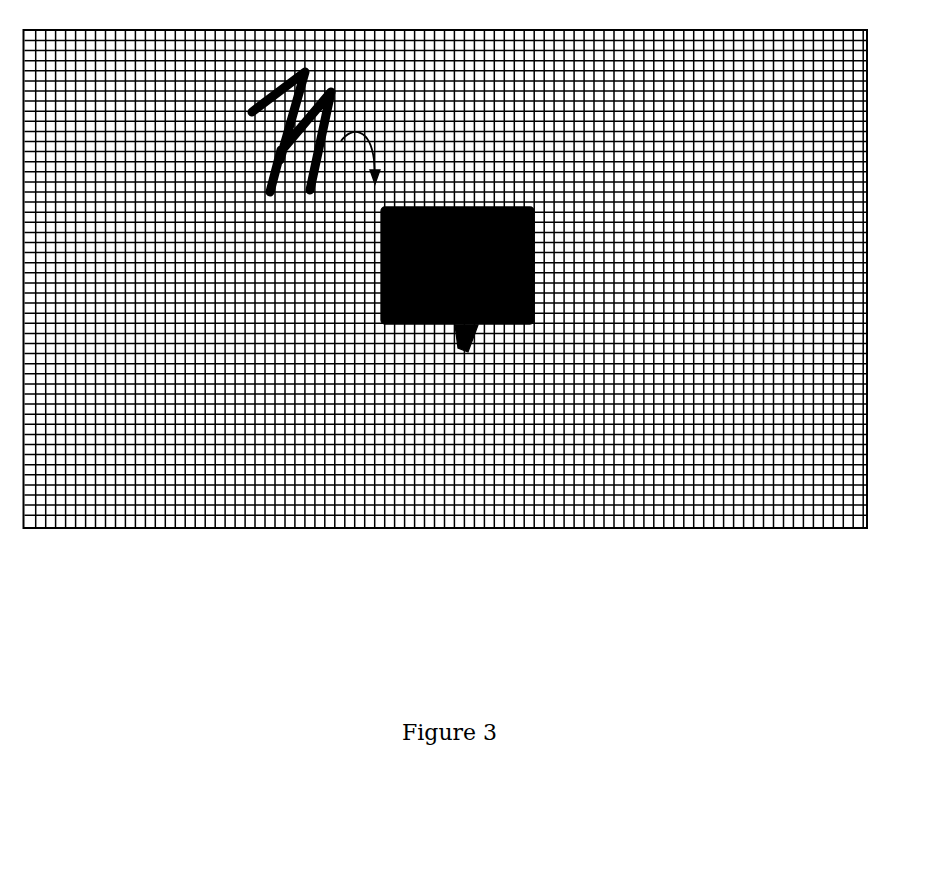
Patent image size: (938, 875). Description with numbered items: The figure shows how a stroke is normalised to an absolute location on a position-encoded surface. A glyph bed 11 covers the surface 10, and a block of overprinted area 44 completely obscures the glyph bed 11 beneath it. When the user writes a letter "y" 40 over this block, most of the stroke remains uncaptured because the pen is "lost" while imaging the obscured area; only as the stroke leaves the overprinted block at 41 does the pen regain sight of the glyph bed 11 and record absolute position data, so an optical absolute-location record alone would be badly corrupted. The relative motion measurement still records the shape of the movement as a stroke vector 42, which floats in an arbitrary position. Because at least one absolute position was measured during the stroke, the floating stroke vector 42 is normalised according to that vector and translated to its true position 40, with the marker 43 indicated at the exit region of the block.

The image frame 10 is at (645, 528).
The grid pattern 11 is at (467, 485).
The search region 40 is at (618, 316).
The reference block position 41 is at (456, 335).
The feature mark 42 is at (267, 150).
The marker 43 is at (458, 340).
The block 44 is at (381, 245).